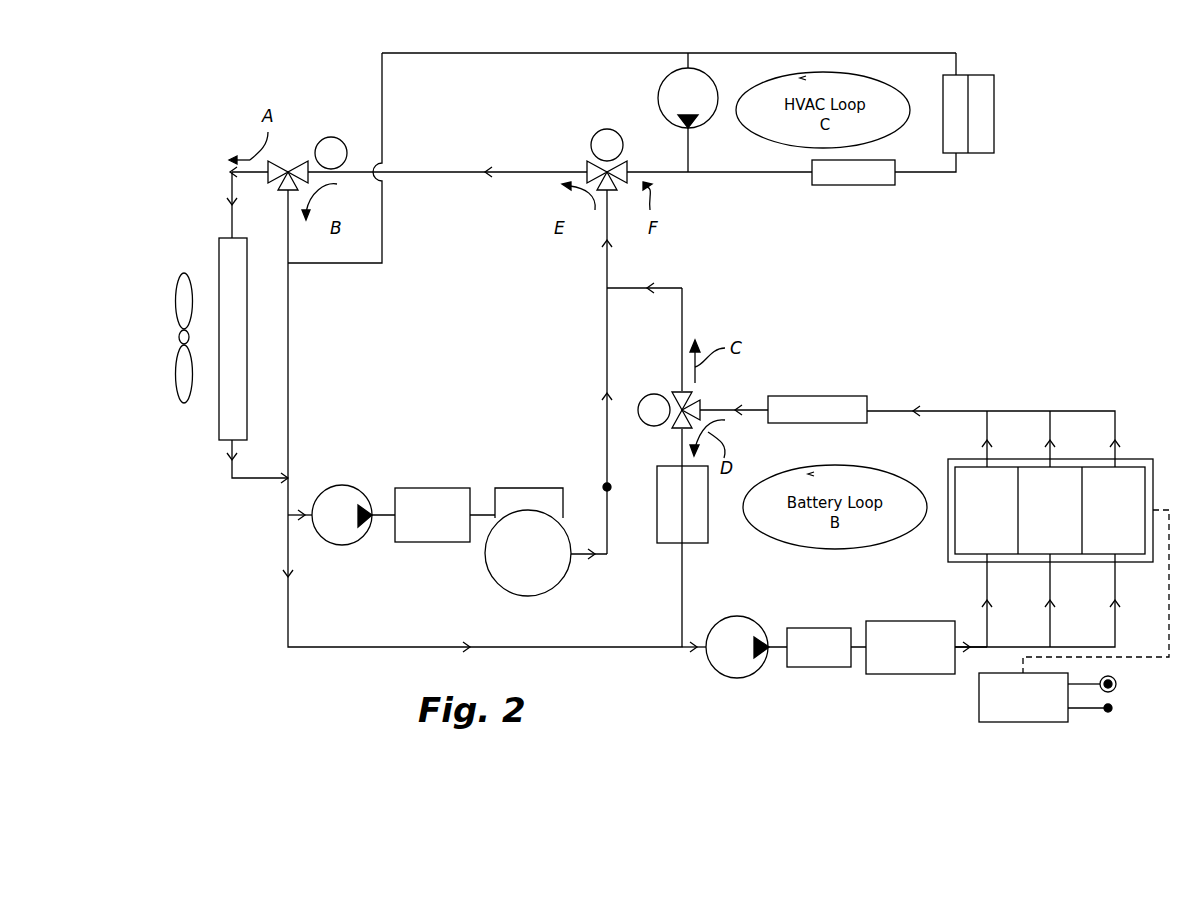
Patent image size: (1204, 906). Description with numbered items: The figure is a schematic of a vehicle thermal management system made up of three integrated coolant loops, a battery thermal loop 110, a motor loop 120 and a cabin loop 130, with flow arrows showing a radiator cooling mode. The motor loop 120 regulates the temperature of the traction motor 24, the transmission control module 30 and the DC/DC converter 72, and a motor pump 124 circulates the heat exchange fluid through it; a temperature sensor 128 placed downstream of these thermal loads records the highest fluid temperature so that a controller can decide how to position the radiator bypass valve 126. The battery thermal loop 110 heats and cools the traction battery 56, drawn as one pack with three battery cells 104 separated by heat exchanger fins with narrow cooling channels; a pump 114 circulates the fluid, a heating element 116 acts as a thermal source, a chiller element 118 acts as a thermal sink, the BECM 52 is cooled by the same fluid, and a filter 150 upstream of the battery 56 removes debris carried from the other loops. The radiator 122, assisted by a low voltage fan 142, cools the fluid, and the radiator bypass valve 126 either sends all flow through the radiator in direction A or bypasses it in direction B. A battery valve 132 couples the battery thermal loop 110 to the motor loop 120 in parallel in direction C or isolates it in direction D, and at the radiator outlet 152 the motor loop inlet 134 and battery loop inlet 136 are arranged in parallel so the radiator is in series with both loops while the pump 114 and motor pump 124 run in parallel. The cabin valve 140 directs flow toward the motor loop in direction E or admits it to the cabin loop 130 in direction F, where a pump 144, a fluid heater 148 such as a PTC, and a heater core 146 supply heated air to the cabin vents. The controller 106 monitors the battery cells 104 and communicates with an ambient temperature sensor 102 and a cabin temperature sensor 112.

The traction motor 24 is at (528, 553).
The transmission control module 30 is at (530, 488).
The BECM 52 is at (815, 396).
The traction battery 56 is at (1059, 491).
The DC/DC converter 72 is at (432, 488).
The ambient temperature sensor 102 is at (1112, 676).
The battery cell 104 is at (1050, 510).
The controller 106 is at (1023, 697).
The battery thermal loop 110 is at (953, 411).
The cabin temperature sensor 112 is at (1108, 712).
The pump 114 is at (735, 616).
The heating element 116 is at (910, 621).
The chiller element 118 is at (708, 517).
The motor loop 120 is at (607, 340).
The radiator 122 is at (247, 337).
The motor pump 124 is at (340, 486).
The radiator bypass valve 126 is at (296, 160).
The temperature sensor 128 is at (611, 487).
The cabin loop 130 is at (815, 53).
The battery valve 132 is at (678, 392).
The motor loop inlet 134 is at (296, 513).
The battery loop inlet 136 is at (690, 657).
The cabin valve 140 is at (627, 165).
The low voltage fan 142 is at (182, 275).
The pump 144 is at (719, 97).
The heater core 146 is at (994, 115).
The fluid heater 148 is at (853, 185).
The filter 150 is at (820, 628).
The outlet 152 is at (228, 450).